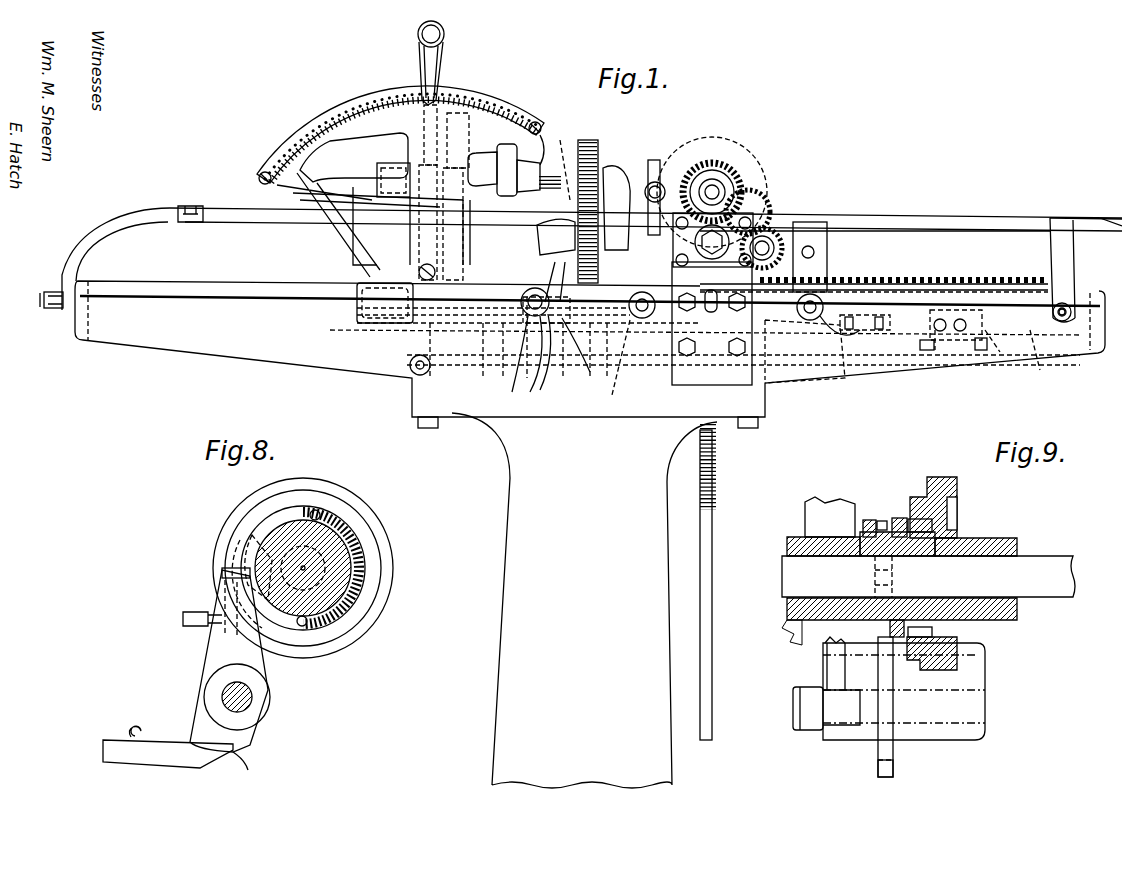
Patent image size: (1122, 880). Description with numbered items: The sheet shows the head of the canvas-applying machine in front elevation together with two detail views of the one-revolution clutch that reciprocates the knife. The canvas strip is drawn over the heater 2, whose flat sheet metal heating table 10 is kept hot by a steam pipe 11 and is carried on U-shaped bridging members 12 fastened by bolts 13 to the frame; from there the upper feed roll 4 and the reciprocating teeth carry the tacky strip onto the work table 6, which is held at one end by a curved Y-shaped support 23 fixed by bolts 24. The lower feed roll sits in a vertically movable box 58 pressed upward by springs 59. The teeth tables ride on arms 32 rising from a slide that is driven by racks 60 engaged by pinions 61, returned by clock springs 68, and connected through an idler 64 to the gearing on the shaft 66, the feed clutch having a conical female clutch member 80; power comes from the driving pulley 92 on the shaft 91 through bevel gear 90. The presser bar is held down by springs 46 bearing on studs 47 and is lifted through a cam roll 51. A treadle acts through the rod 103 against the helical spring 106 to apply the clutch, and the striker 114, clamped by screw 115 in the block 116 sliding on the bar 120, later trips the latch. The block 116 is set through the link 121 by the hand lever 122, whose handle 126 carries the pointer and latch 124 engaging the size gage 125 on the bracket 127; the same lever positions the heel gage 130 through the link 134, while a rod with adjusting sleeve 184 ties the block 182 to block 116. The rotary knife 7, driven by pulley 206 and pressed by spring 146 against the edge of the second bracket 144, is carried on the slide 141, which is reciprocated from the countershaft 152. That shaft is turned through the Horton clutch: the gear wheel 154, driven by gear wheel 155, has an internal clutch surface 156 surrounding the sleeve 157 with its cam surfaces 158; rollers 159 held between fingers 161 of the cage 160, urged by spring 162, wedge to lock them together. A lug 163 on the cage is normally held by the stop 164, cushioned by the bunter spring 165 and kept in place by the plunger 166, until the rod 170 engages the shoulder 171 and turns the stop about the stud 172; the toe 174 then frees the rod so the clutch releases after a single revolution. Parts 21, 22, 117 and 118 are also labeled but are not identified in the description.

In FIG. 1, the heater 2 is at (926, 222).
In FIG. 1, the upper feed roll 4 is at (716, 186).
In FIG. 1, the work table 6 is at (262, 215).
In FIG. 1, the rotary knife 7 is at (590, 140).
In FIG. 1, the heating table 10 is at (1012, 222).
In FIG. 1, the steam pipe 11 is at (940, 232).
In FIG. 1, the U-shaped bridging members 12 is at (660, 175).
In FIG. 1, the bolts 13 is at (1078, 308).
In FIG. 1, the spool 21 is at (545, 170).
In FIG. 1, the pivot screw 22 is at (528, 348).
In FIG. 1, the curved Y-shaped support 23 is at (140, 218).
In FIG. 1, the bolts 24 is at (42, 298).
In FIG. 1, the arm 32 is at (503, 322).
In FIG. 1, the springs 46 is at (656, 175).
In FIG. 1, the studs 47 is at (645, 190).
In FIG. 1, the cam roll 51 is at (566, 310).
In FIG. 1, the vertically movable box 58 is at (768, 200).
In FIG. 1, the springs 59 is at (712, 323).
In FIG. 1, the racks 60 is at (892, 278).
In FIG. 1, the pinions 61 is at (805, 222).
In FIG. 1, the idler 64 is at (775, 232).
In FIG. 1, the shaft 66 is at (728, 180).
In FIG. 1, the spiral or clock springs 68 is at (826, 270).
In FIG. 1, the conical female clutch member 80 is at (745, 162).
In FIG. 1, the bevel gear 90 is at (688, 148).
In FIG. 1, the shaft 91 is at (320, 196).
In FIG. 1, the driving pulley 92 is at (542, 126).
In FIG. 1, the rod 103 is at (712, 546).
In FIG. 1, the helical spring 106 is at (716, 474).
In FIG. 1, the striker 114 is at (925, 352).
In FIG. 1, the clamping screw 115 is at (978, 352).
In FIG. 1, the block 116 is at (968, 310).
In FIG. 1, the pin 117 is at (940, 352).
In FIG. 1, the stop 118 is at (1004, 359).
In FIG. 1, the bar 120 is at (1048, 360).
In FIG. 1, the link 121 is at (639, 364).
In FIG. 1, the hand lever 122 is at (420, 256).
In FIG. 1, the pointer and latch 124 is at (424, 66).
In FIG. 1, the size gage 125 is at (468, 130).
In FIG. 1, the handle 126 is at (445, 34).
In FIG. 1, the bracket 127 is at (318, 180).
In FIG. 1, the heel gage 130 is at (350, 236).
In FIG. 1, the link 134 is at (472, 275).
In FIG. 1, the slide 141 is at (550, 361).
In FIG. 1, the second bracket 144 is at (592, 363).
In FIG. 1, the spring 146 is at (555, 165).
In FIG. 9, the countershaft 152 is at (1035, 592).
In FIG. 1, the gear wheel 154 is at (560, 237).
In FIG. 1, the gear wheel 155 is at (612, 165).
In FIG. 9, the annular internal smooth clutch surface 156 is at (916, 490).
In FIG. 9, the sleeve 157 is at (868, 518).
In FIG. 8, the cam surfaces 158 is at (370, 505).
In FIG. 9, the cam surfaces 158 is at (960, 540).
In FIG. 8, the clutch rollers 159 is at (240, 530).
In FIG. 9, the clutch rollers 159 is at (932, 527).
In FIG. 8, the roll-holding cage 160 is at (320, 512).
In FIG. 9, the roll-holding cage 160 is at (897, 517).
In FIG. 8, the fingers 161 is at (252, 498).
In FIG. 9, the fingers 161 is at (897, 665).
In FIG. 8, the spring 162 is at (360, 530).
In FIG. 8, the lug 163 is at (248, 550).
In FIG. 9, the lug 163 is at (872, 572).
In FIG. 8, the stop 164 is at (222, 592).
In FIG. 9, the stop 164 is at (845, 652).
In FIG. 8, the bunter spring 165 is at (222, 571).
In FIG. 8, the spring pressed plunger 166 is at (183, 624).
In FIG. 8, the rod 170 is at (130, 735).
In FIG. 8, the shoulder 171 is at (250, 757).
In FIG. 9, the shoulder 171 is at (878, 770).
In FIG. 8, the supporting stud 172 is at (253, 704).
In FIG. 9, the supporting stud 172 is at (935, 705).
In FIG. 8, the toe 174 is at (190, 740).
In FIG. 1, the block 182 is at (796, 383).
In FIG. 1, the adjusting sleeve 184 is at (882, 365).
In FIG. 1, the pulley 206 is at (578, 144).